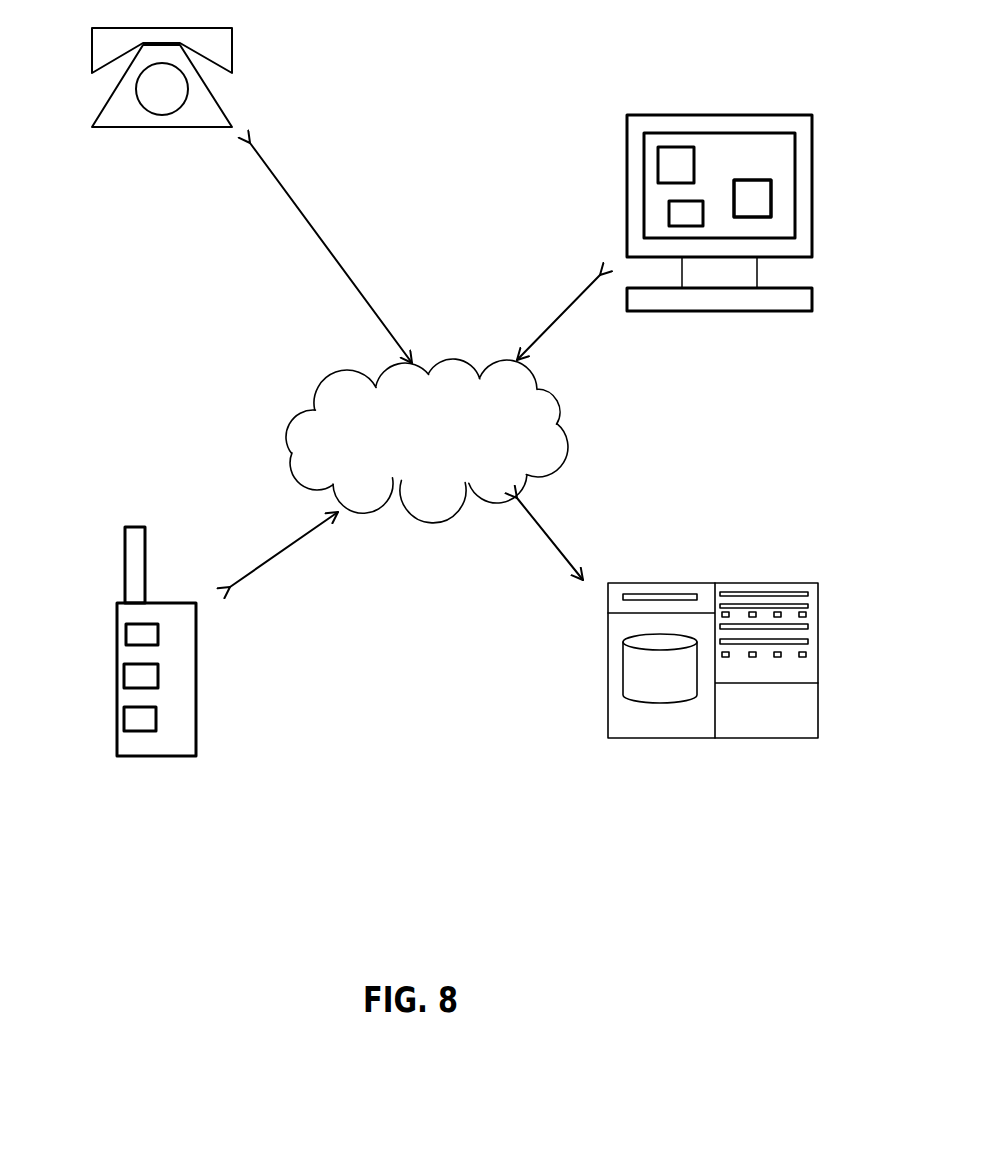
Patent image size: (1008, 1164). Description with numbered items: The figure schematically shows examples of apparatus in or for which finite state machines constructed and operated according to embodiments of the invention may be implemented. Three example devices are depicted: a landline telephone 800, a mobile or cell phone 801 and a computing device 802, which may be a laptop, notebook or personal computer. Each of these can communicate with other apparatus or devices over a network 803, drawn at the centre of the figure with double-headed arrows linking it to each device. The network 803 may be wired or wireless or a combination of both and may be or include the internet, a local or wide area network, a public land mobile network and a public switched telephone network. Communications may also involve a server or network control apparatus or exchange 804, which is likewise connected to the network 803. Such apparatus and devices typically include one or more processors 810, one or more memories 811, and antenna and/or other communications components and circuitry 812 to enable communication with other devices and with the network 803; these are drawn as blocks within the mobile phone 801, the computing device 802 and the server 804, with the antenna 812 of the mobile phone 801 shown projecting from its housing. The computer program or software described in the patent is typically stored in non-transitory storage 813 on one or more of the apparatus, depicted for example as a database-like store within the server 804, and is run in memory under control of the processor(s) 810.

The landline telephone 800 is at (228, 52).
The mobile or cell phone 801 is at (190, 688).
The computing device 802 is at (812, 170).
The network 803 is at (340, 380).
The server or network control apparatus or exchange 804 is at (610, 640).
The processor 810 is at (658, 163).
The memory 811 is at (669, 215).
The antenna and/or other communications component and circuitry 812 is at (771, 201).
The non-transitory storage 813 is at (77, 625).